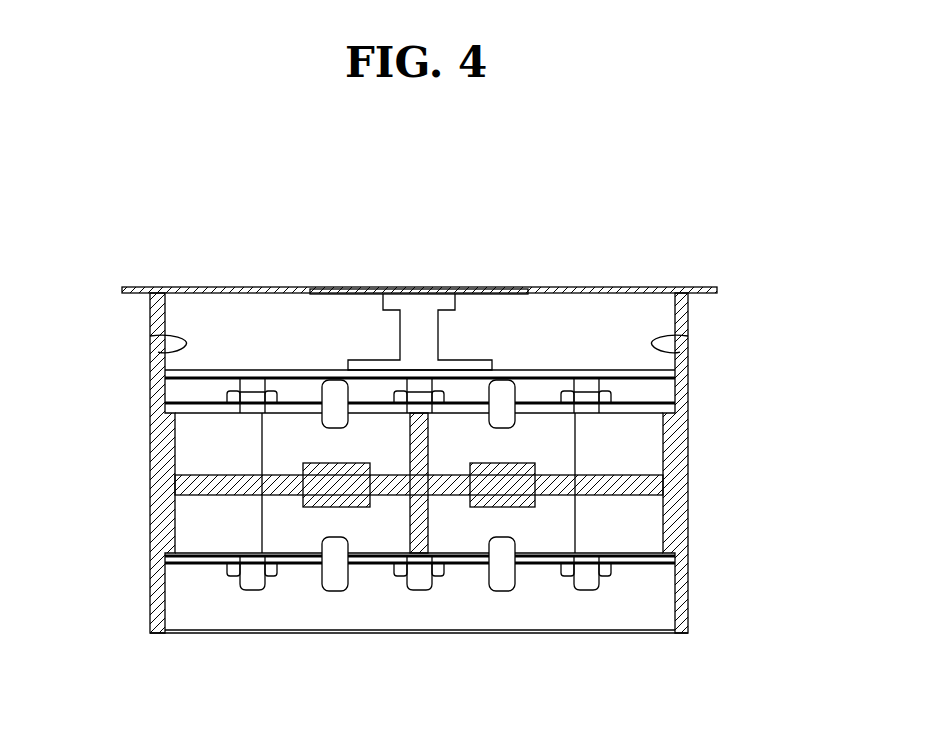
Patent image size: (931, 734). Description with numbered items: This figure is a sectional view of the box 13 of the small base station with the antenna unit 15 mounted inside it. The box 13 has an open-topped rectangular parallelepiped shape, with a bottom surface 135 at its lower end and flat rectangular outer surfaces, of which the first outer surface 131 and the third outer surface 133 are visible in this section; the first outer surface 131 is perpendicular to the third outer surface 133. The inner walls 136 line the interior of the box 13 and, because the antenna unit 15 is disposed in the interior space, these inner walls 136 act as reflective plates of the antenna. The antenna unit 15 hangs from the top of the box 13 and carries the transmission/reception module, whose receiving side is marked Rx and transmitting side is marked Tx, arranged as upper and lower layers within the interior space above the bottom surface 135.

The box 13 is at (730, 277).
The antenna unit 15 is at (429, 284).
The first outer surface 131 is at (688, 460).
The third outer surface 133 is at (150, 462).
The bottom surface 135 is at (472, 636).
The inner walls 136 is at (150, 336).
The receiving electrode Rx is at (613, 389).
The transmitting electrode Tx is at (588, 572).